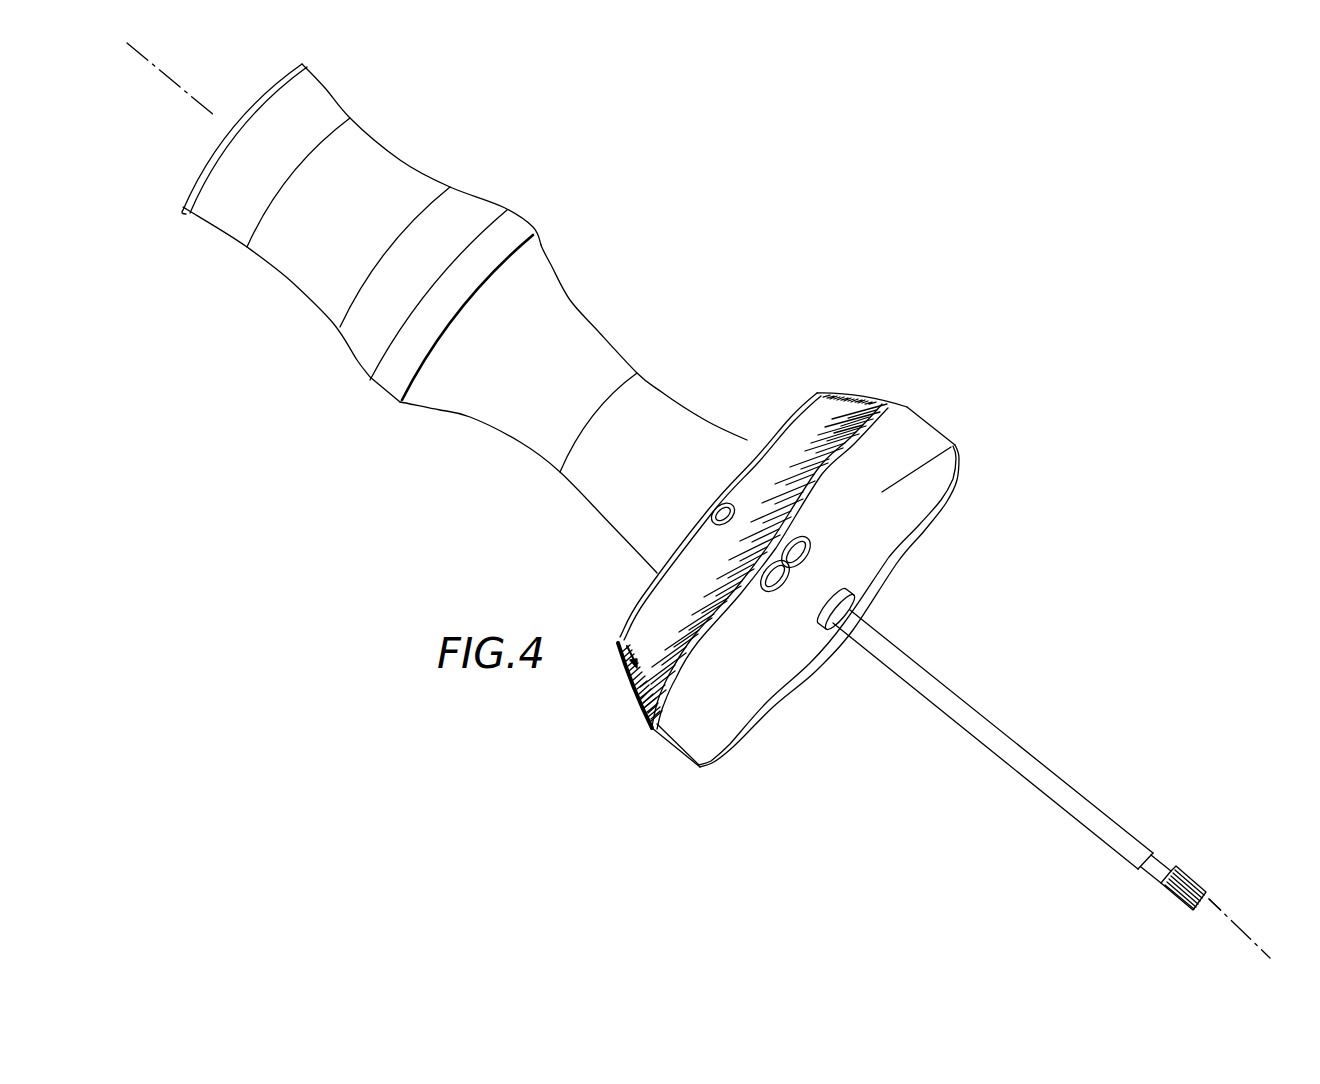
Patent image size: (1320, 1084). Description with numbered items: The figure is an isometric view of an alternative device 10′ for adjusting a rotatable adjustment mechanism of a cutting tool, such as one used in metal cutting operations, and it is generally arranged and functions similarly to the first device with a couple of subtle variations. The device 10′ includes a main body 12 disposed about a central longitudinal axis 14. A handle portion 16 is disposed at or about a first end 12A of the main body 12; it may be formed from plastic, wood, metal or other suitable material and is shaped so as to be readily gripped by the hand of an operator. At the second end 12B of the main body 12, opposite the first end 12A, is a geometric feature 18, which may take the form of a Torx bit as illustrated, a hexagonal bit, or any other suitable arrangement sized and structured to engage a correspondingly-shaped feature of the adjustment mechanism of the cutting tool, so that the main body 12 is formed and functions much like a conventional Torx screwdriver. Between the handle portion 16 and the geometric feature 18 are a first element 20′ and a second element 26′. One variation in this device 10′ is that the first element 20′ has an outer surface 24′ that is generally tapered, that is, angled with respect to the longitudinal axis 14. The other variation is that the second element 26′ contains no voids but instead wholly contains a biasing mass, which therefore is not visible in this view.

The device 10′ is at (786, 311).
The main body 12 is at (920, 678).
The first end 12A is at (186, 124).
The second end 12B is at (1228, 892).
The central longitudinal axis 14 is at (1247, 938).
The handle portion 16 is at (538, 292).
The geometric feature 18 is at (1172, 897).
The first element 20′ is at (812, 420).
The outer surface 24′ is at (741, 490).
The second element 26′ is at (934, 437).